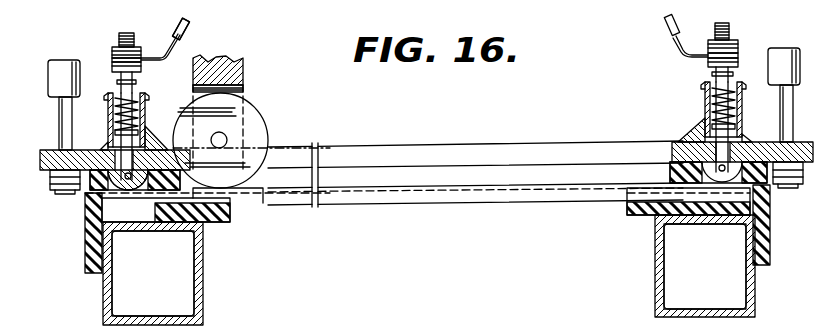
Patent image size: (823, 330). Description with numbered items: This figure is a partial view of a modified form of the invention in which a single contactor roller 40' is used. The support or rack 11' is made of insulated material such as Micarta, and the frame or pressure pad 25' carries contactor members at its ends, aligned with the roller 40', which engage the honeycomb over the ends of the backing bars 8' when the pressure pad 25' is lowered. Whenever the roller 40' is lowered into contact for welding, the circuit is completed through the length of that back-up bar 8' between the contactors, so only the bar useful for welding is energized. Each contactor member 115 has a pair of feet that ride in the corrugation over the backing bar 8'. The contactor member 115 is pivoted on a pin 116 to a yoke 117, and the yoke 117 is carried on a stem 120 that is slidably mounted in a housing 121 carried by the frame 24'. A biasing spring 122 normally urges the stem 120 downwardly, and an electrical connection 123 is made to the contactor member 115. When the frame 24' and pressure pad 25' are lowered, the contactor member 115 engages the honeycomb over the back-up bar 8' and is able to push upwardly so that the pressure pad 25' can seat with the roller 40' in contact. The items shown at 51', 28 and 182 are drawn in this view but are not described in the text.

The electrical connection 123 is at (148, 57).
The lever handle tip 51' is at (204, 22).
The housing 121 is at (110, 95).
The knob 28 is at (60, 123).
The yoke 117 is at (107, 148).
The stem 120 is at (134, 84).
The biasing spring 122 is at (146, 101).
The contactor member 115 is at (150, 150).
The contactor roller 40' is at (251, 121).
The frame 24' is at (475, 152).
The spring 182 is at (712, 108).
The pin 116 is at (128, 180).
The pressure pad 25' is at (426, 184).
The backing bar 8' is at (408, 229).
The support or rack 11' is at (417, 213).